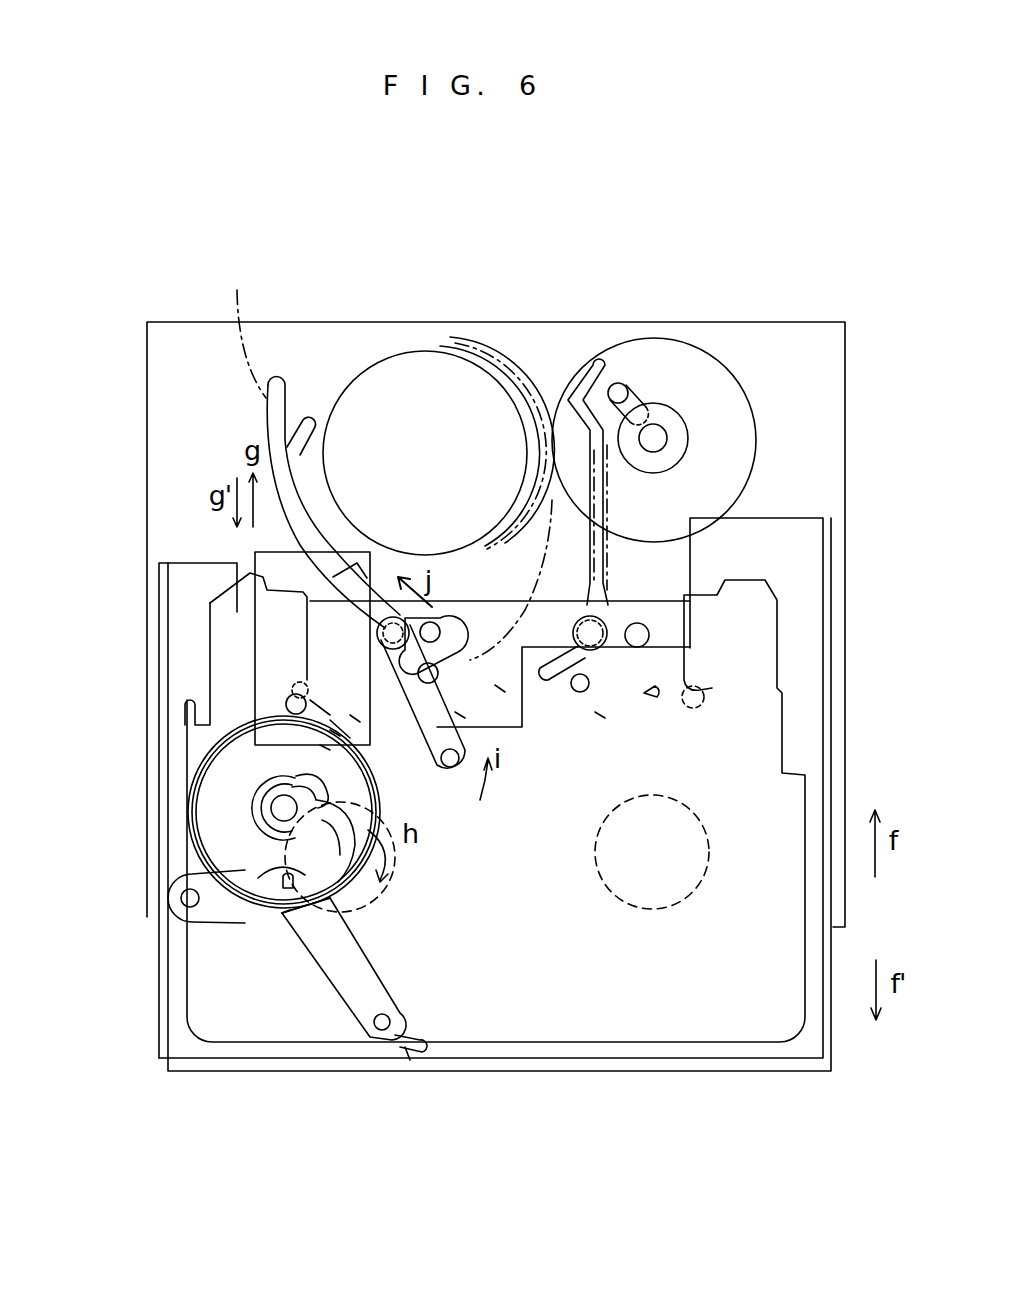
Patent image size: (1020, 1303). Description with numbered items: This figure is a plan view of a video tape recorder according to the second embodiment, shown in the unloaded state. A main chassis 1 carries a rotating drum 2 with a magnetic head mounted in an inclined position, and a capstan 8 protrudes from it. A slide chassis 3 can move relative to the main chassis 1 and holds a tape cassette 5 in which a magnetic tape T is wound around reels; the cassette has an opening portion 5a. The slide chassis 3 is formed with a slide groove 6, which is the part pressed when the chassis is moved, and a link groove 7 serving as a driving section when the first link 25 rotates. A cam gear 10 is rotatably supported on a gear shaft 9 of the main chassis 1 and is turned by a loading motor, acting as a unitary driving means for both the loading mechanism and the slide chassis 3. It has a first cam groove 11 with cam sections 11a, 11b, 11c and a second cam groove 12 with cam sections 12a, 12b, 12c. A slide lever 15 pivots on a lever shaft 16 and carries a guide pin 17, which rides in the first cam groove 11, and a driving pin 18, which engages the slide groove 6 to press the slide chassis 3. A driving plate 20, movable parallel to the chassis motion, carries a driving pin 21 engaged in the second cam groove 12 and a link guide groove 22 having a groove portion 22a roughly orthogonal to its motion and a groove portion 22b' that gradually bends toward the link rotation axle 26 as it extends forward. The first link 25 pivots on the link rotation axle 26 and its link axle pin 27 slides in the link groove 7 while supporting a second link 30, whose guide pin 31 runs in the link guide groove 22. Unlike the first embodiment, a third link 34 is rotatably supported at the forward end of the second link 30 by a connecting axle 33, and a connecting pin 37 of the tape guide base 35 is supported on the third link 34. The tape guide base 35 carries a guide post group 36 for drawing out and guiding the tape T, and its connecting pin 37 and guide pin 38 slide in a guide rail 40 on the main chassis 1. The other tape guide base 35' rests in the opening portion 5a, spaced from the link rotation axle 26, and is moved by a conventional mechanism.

The main chassis 1 is at (822, 385).
The rotating drum 2 is at (403, 373).
The slide chassis 3 is at (803, 600).
The tape cassette 5 is at (718, 1025).
The opening portion 5a is at (657, 697).
The slide groove 6 is at (408, 1058).
The link groove 7 is at (330, 730).
The capstan 8 is at (655, 430).
The gear shaft 9 is at (240, 828).
The cam gear 10 is at (240, 818).
The first cam groove 11 is at (330, 880).
The cam section 11a is at (282, 913).
The cam section 11b is at (345, 875).
The cam section 11c is at (360, 850).
The second cam groove 12 is at (240, 777).
The cam section 12a is at (265, 760).
The cam section 12b is at (245, 753).
The cam section 12c is at (240, 797).
The slide lever 15 is at (330, 963).
The lever shaft 16 is at (190, 898).
The guide pin 17 is at (282, 913).
The driving pin 18 is at (382, 1032).
The driving plate 20 is at (262, 585).
The driving pin 21 is at (330, 718).
The link guide groove 22 is at (345, 725).
The groove portion 22a is at (340, 735).
The groove portion 22b' is at (192, 612).
The first link 25 is at (500, 640).
The link rotation axle 26 is at (598, 713).
The link axle pin 27 is at (320, 745).
The second link 30 is at (420, 720).
The guide pin 31 is at (300, 692).
The connecting axle 33 is at (350, 715).
The third link 34 is at (457, 713).
The tape guide base 35 is at (449, 580).
The other tape guide base 35' is at (595, 671).
The guide post group 36 is at (443, 617).
The connecting pin 37 is at (500, 688).
The guide pin 38 is at (383, 613).
The guide rail 40 is at (308, 440).
The magnetic tape T is at (650, 597).